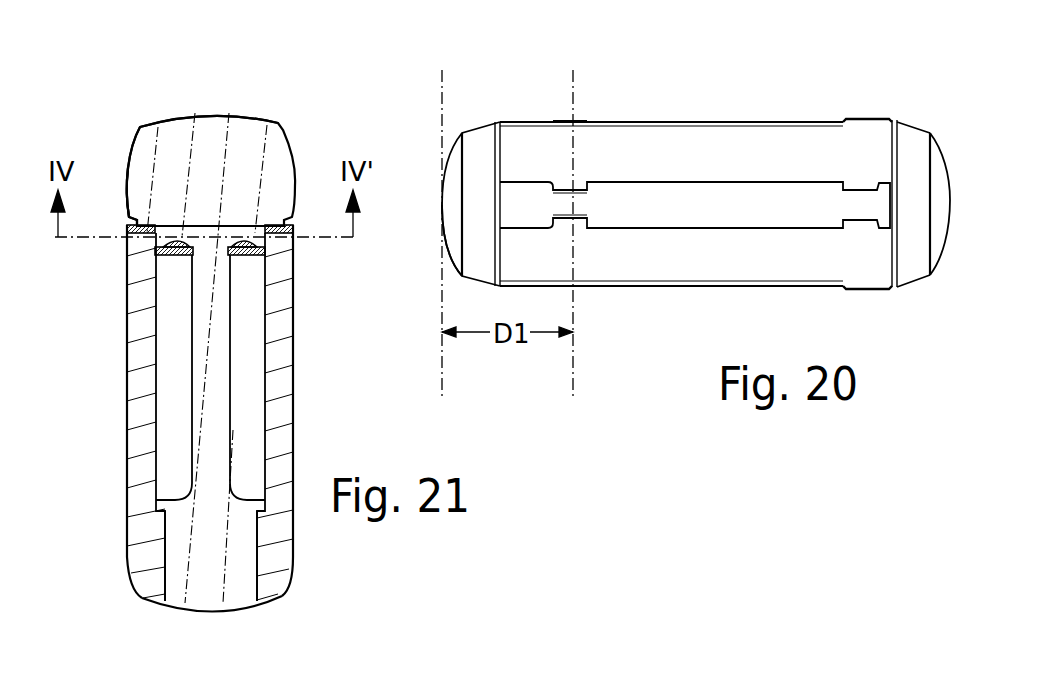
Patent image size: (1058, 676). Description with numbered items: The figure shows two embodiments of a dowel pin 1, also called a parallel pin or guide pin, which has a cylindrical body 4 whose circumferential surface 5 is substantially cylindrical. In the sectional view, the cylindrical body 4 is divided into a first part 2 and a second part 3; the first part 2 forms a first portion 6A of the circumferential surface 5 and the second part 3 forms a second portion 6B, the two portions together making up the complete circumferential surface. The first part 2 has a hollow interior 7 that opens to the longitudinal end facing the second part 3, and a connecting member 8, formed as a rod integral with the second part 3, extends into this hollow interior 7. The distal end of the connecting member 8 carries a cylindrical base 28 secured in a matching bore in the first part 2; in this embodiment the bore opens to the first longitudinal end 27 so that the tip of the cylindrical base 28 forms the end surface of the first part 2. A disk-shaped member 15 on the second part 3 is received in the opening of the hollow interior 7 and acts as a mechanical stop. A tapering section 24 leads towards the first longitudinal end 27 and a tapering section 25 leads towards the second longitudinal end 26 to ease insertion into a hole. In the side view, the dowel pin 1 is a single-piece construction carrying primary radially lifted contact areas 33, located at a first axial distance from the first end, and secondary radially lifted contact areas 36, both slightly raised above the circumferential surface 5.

In FIG. 21, the dowel pin 1 is at (318, 95).
In FIG. 20, the dowel pin 1 is at (760, 63).
In FIG. 21, the first part 2 is at (127, 484).
In FIG. 21, the second part 3 is at (295, 168).
In FIG. 21, the cylindrical body 4 is at (320, 360).
In FIG. 20, the cylindrical body 4 is at (715, 310).
In FIG. 21, the circumferential surface 5 is at (110, 285).
In FIG. 20, the circumferential surface 5 is at (653, 120).
In FIG. 21, the first portion of the circumferential surface 6A is at (127, 311).
In FIG. 21, the second portion of the circumferential surface 6B is at (128, 194).
In FIG. 21, the hollow interior 7 is at (170, 340).
In FIG. 21, the connecting member 8 is at (212, 407).
In FIG. 21, the disk-shaped member 15 is at (263, 240).
In FIG. 21, the tapering section 24 is at (130, 578).
In FIG. 20, the tapering section 24 is at (478, 127).
In FIG. 21, the tapering section 25 is at (131, 150).
In FIG. 20, the tapering section 25 is at (905, 121).
In FIG. 21, the second longitudinal end 26 is at (166, 117).
In FIG. 20, the second longitudinal end 26 is at (940, 163).
In FIG. 21, the first longitudinal end 27 is at (247, 608).
In FIG. 20, the first longitudinal end 27 is at (448, 238).
In FIG. 21, the cylindrical base 28 is at (235, 545).
In FIG. 20, the primary radially lifted contact areas 33 is at (563, 120).
In FIG. 20, the secondary radially lifted contact areas 36 is at (858, 120).